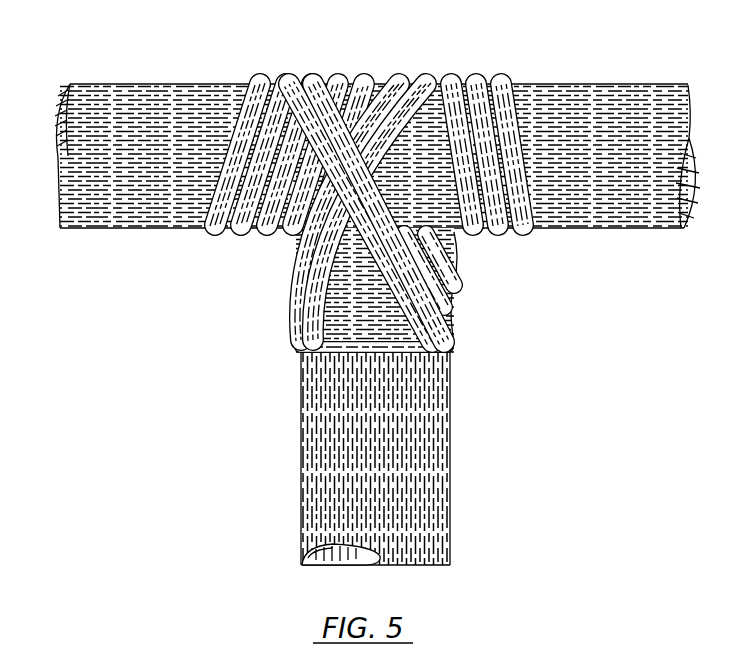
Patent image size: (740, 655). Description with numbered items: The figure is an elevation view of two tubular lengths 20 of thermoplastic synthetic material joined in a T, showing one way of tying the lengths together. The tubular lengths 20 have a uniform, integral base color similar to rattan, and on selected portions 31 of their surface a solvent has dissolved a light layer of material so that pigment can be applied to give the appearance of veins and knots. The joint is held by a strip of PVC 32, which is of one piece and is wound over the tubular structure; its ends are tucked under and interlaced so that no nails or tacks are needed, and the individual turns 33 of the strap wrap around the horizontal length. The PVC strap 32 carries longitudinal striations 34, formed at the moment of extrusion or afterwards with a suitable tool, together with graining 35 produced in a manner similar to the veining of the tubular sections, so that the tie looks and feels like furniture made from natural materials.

The pole 20 is at (124, 96).
The lashing 31 is at (500, 97).
The diagonal strand 32 is at (305, 70).
The wrapping turn 33 is at (287, 70).
The crossing turn 34 is at (445, 318).
The frapping turn 35 is at (445, 338).